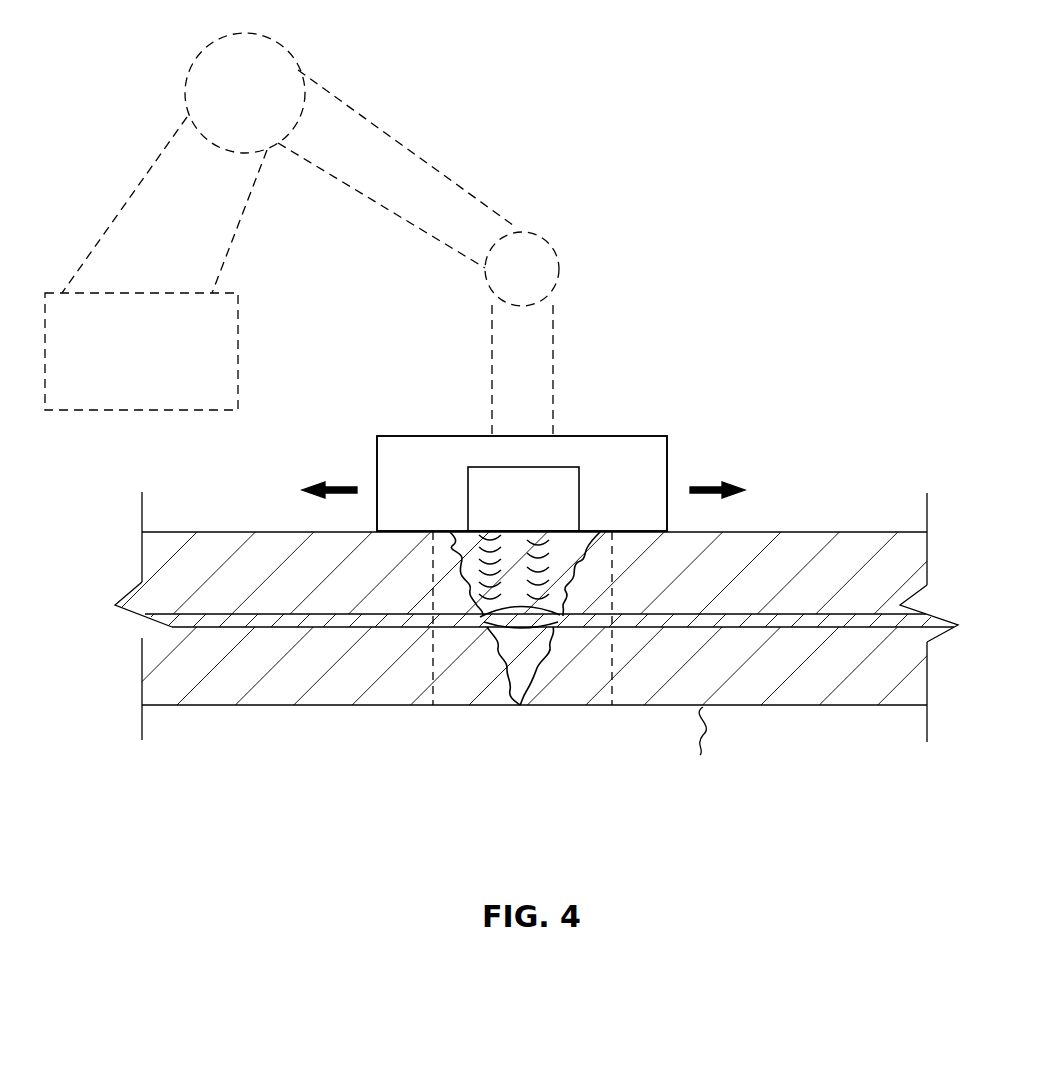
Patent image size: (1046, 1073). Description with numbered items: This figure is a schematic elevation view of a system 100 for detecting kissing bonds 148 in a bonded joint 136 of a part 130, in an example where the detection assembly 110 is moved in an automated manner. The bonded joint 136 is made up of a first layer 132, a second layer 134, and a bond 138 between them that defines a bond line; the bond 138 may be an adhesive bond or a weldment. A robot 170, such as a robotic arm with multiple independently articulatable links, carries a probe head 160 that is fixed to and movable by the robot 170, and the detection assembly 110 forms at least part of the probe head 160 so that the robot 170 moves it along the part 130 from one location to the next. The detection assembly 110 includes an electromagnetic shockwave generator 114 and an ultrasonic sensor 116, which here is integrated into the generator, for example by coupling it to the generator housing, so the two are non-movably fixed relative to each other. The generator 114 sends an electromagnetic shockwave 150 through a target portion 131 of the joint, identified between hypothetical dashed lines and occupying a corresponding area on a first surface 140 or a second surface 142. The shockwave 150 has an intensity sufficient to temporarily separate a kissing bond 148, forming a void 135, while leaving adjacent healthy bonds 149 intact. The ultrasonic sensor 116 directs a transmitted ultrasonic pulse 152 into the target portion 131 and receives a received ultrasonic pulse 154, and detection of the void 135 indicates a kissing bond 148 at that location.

The system 100 is at (842, 80).
The detection assembly 110 is at (670, 433).
The electromagnetic shockwave generator 114 is at (396, 459).
The ultrasonic sensor 116 is at (493, 505).
The part 130 is at (737, 722).
The target portion 131 is at (452, 707).
The first layer 132 is at (883, 550).
The second layer 134 is at (780, 676).
The void 135 is at (520, 645).
The bonded joint 136 is at (652, 708).
The bond 138 is at (220, 613).
The first surface 140 is at (792, 532).
The second surface 142 is at (705, 742).
The kissing bond 148 is at (566, 638).
The healthy bond 149 is at (457, 630).
The electromagnetic shockwave 150 is at (507, 650).
The transmitted ultrasonic pulse 152 is at (475, 562).
The received ultrasonic pulse 154 is at (578, 540).
The probe head 160 is at (672, 466).
The robot 170 is at (433, 160).